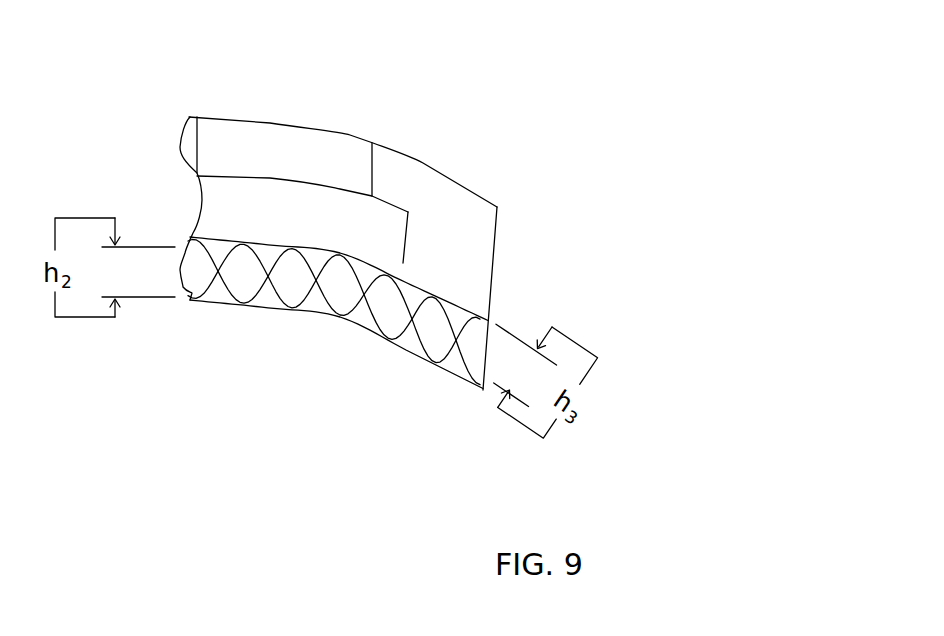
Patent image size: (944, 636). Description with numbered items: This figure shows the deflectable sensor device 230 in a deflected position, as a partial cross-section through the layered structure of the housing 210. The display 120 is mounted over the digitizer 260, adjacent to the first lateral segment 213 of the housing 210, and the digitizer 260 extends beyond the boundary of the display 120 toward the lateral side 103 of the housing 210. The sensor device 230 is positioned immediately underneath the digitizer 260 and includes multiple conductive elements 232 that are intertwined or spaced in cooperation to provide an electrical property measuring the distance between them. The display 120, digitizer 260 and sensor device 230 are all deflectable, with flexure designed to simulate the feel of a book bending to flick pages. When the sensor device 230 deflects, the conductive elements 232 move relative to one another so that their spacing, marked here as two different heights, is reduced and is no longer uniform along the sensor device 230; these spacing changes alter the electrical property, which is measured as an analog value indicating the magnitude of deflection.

The side edge of layered structure 103 is at (497, 262).
The display 120 is at (245, 142).
The housing 210 is at (477, 165).
The first lateral segment 213 is at (404, 167).
The sensor device 230 is at (413, 352).
The conductive elements 232 is at (252, 292).
The digitizer 260 is at (227, 200).